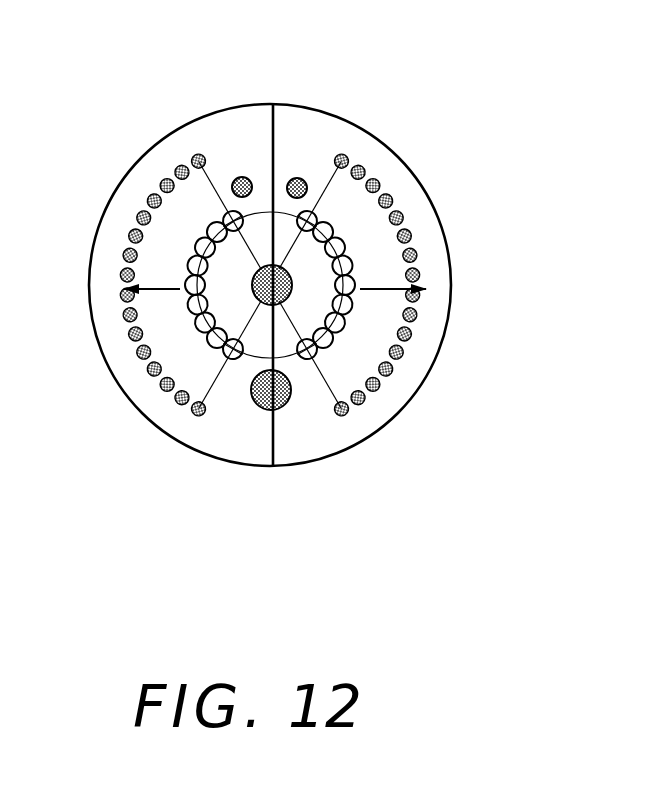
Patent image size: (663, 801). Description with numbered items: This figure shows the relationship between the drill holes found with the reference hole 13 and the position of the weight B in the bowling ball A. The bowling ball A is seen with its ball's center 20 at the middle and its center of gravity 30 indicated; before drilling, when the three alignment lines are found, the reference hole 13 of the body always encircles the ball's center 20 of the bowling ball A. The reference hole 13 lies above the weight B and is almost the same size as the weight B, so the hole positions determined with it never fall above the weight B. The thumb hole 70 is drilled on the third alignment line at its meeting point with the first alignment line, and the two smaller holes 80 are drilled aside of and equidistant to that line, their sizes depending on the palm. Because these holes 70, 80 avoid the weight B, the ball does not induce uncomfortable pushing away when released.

The bowling ball A is at (443, 213).
The weight B is at (194, 297).
The reference hole 13 is at (292, 360).
The ball's center 20 is at (280, 263).
The center of gravity 30 is at (196, 331).
The thumb hole 70 is at (255, 405).
The smaller holes 80 is at (239, 178).